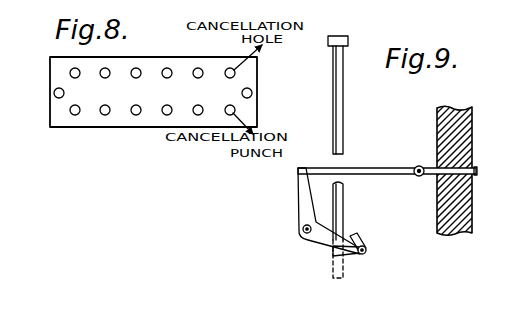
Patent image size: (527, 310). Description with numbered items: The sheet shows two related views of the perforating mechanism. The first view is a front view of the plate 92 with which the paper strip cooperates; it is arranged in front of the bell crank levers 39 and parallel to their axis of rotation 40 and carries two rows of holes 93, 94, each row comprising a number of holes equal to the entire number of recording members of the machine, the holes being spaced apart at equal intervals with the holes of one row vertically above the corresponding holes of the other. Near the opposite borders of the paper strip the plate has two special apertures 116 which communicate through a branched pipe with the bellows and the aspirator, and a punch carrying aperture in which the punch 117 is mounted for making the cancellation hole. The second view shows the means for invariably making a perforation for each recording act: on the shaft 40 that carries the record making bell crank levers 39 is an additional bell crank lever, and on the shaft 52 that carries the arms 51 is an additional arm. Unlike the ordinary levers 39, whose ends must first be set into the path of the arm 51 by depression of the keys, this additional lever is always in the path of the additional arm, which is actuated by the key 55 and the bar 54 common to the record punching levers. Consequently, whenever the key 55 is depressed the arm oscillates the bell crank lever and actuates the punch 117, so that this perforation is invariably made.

In FIG. 8, the plate 92 is at (188, 54).
In FIG. 8, the row of holes 93 is at (165, 114).
In FIG. 8, the row of holes 94 is at (164, 77).
In FIG. 8, the special aperture 116 is at (54, 93).
In FIG. 8, the punch 117 is at (72, 68).
In FIG. 9, the punch 117 is at (431, 167).
In FIG. 9, the bar 54 is at (378, 90).
In FIG. 9, the key 55 is at (378, 34).
In FIG. 9, the bell crank lever 39 is at (325, 226).
In FIG. 9, the shaft 40 is at (304, 229).
In FIG. 9, the arm 51 is at (392, 234).
In FIG. 9, the shaft 52 is at (402, 267).